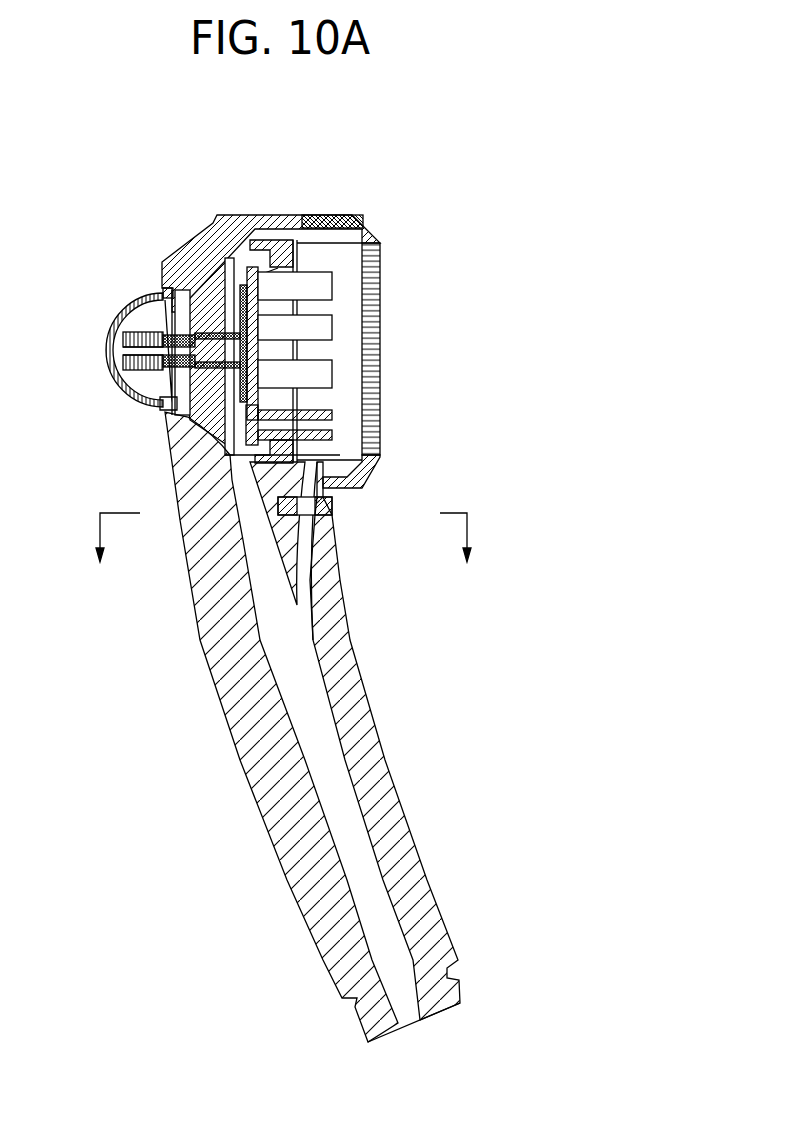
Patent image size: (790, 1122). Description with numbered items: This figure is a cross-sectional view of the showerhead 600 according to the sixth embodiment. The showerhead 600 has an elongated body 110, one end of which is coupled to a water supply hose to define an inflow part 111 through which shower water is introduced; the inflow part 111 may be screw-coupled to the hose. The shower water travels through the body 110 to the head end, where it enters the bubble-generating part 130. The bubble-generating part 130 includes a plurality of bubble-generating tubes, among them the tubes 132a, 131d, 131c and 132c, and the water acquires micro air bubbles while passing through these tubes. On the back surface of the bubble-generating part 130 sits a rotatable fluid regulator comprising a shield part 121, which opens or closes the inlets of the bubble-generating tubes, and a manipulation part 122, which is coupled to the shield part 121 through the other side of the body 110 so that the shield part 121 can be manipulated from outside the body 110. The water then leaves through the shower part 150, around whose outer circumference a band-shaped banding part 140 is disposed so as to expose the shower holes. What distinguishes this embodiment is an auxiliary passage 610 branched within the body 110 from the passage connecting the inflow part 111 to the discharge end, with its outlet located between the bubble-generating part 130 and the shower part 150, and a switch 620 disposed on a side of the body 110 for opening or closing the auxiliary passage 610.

The showerhead 600 is at (512, 186).
The banding part 140 is at (360, 219).
The shower part 150 is at (383, 252).
The bubble-generating part 130 is at (255, 256).
The bubble-generating tube 132a is at (325, 283).
The bubble-generating tube 131d is at (325, 327).
The bubble-generating tube 131c is at (325, 372).
The bubble-generating tube 132c is at (325, 447).
The manipulation part 122 is at (132, 299).
The shield part 121 is at (188, 417).
The switch 620 is at (333, 506).
The auxiliary passage 610 is at (298, 568).
The body 110 is at (360, 688).
The inflow part 111 is at (420, 1021).